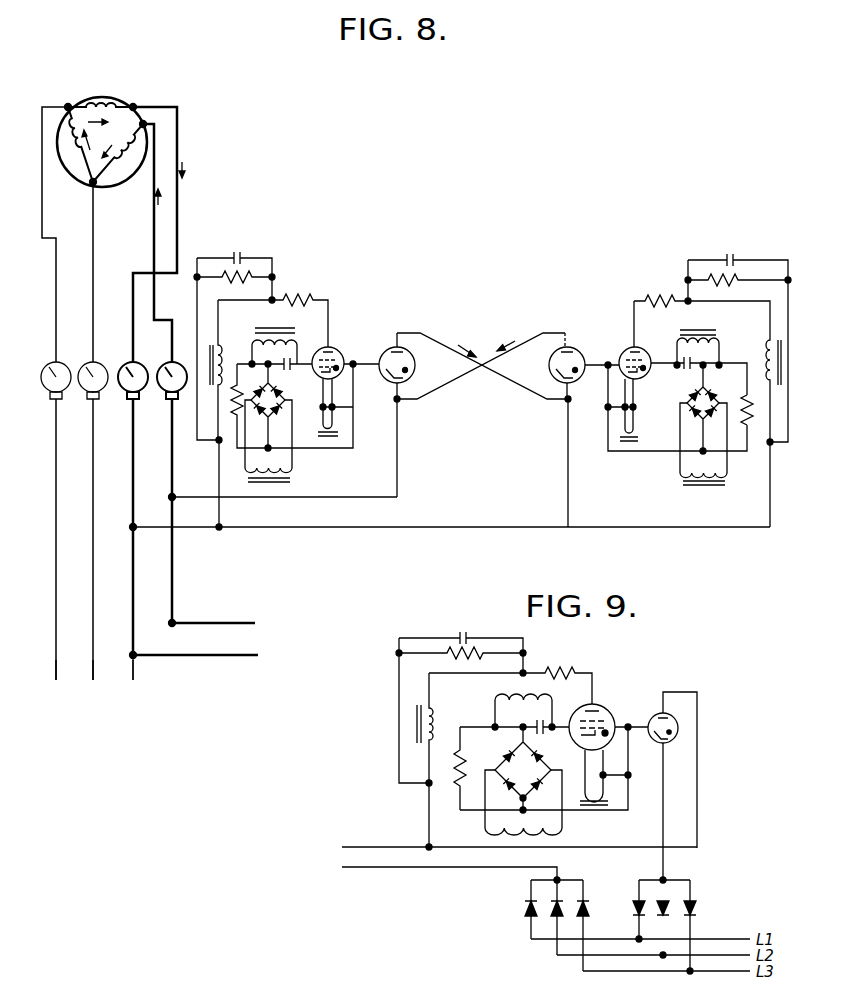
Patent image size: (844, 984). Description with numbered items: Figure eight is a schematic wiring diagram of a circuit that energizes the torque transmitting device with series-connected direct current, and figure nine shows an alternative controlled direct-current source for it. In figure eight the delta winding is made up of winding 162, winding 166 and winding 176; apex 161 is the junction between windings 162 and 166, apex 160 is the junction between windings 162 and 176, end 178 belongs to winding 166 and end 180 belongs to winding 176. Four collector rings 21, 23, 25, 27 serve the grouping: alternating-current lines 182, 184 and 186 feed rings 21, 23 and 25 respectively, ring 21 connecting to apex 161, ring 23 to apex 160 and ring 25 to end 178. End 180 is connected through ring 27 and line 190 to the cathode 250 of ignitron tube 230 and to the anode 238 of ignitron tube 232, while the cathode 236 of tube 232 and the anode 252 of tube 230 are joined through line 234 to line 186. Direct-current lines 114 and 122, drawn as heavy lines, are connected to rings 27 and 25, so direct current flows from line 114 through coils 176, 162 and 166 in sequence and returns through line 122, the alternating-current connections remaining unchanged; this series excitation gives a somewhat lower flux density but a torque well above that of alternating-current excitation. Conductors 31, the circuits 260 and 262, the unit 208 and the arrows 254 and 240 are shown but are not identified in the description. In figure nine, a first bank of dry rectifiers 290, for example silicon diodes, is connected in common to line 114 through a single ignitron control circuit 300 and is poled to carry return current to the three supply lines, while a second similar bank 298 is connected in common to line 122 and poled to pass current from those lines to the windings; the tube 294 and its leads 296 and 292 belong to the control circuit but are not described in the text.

In FIG. 8, the apex 161 is at (68, 106).
In FIG. 8, the winding 166 is at (116, 109).
In FIG. 8, the end of winding 178 is at (135, 107).
In FIG. 8, the end of winding 180 is at (146, 124).
In FIG. 8, the winding 176 is at (124, 152).
In FIG. 8, the winding 162 is at (72, 147).
In FIG. 8, the apex 160 is at (94, 185).
In FIG. 8, the conductors 31 is at (42, 222).
In FIG. 8, the collector ring 21 is at (48, 364).
In FIG. 8, the collector ring 23 is at (88, 364).
In FIG. 8, the collector ring 25 is at (128, 364).
In FIG. 8, the collector ring 27 is at (170, 364).
In FIG. 8, the direct current line 114 is at (247, 623).
In FIG. 9, the direct current line 114 is at (502, 848).
In FIG. 8, the direct current line 122 is at (250, 654).
In FIG. 9, the direct current line 122 is at (432, 869).
In FIG. 8, the alternating-current line 182 is at (55, 672).
In FIG. 8, the alternating-current line 184 is at (93, 672).
In FIG. 8, the alternating-current line 186 is at (133, 672).
In FIG. 8, the line 190 is at (280, 498).
In FIG. 8, the line 234 is at (480, 527).
In FIG. 8, the amplifier circuit 260 is at (372, 486).
In FIG. 8, the amplifier circuit 262 is at (650, 502).
In FIG. 8, the flip-flop circuit 208 is at (508, 481).
In FIG. 8, the ignitron tube 230 is at (386, 352).
In FIG. 8, the anode 252 is at (398, 334).
In FIG. 8, the cathode 250 is at (392, 390).
In FIG. 8, the cross-coupling conductor 254 is at (436, 332).
In FIG. 8, the cross-coupling conductor 240 is at (520, 333).
In FIG. 8, the ignitron tube 232 is at (581, 351).
In FIG. 8, the anode 238 is at (567, 340).
In FIG. 8, the cathode 236 is at (571, 398).
In FIG. 9, the ignitron control circuit 300 is at (478, 702).
In FIG. 9, the tube 294 is at (678, 722).
In FIG. 9, the tube anode lead 296 is at (657, 716).
In FIG. 9, the tube cathode lead 292 is at (661, 744).
In FIG. 9, the second bank of dry rectifiers 298 is at (506, 918).
In FIG. 9, the first bank of dry rectifiers 290 is at (745, 918).